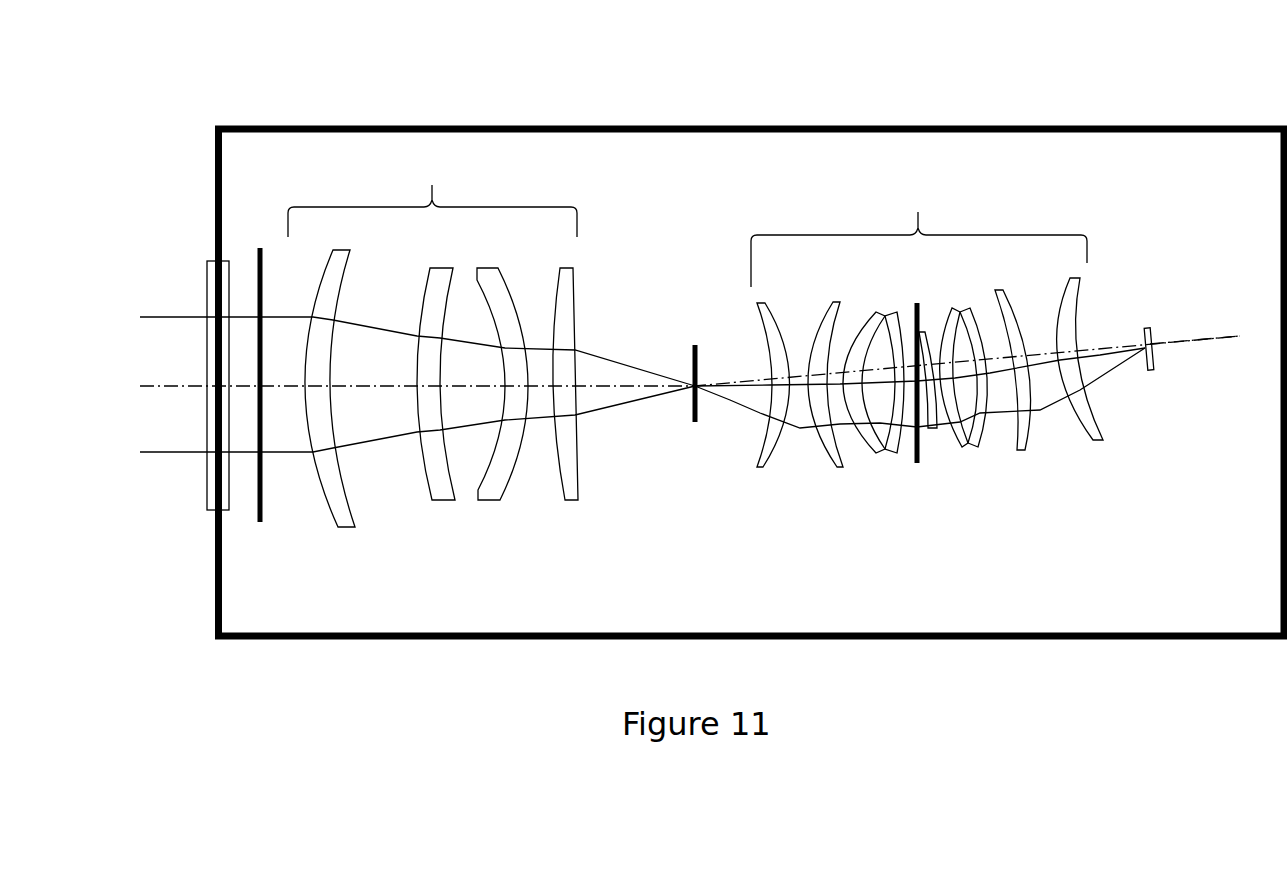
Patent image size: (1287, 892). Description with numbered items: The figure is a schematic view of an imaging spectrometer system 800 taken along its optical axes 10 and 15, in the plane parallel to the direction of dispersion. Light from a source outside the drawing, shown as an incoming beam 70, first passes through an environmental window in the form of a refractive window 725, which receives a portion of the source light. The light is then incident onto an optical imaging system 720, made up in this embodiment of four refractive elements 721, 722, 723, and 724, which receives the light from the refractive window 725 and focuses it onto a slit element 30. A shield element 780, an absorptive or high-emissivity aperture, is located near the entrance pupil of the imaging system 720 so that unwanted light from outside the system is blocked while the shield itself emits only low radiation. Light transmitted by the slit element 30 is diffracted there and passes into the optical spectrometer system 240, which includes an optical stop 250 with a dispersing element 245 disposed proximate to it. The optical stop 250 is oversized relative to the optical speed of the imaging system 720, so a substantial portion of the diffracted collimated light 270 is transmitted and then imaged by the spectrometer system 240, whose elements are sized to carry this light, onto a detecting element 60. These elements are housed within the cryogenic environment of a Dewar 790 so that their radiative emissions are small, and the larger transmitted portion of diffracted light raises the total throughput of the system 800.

The imaging spectrometer system 800 is at (208, 77).
The Dewar 790 is at (730, 125).
The optical imaging system 720 is at (432, 194).
The refractive element 721 is at (345, 525).
The refractive element 722 is at (440, 500).
The refractive element 723 is at (490, 500).
The refractive element 724 is at (570, 500).
The refractive window 725 is at (207, 285).
The shield element 780 is at (263, 502).
The incoming light beam 70 is at (180, 318).
The optical axis 10 is at (180, 390).
The slit element 30 is at (682, 365).
The optical spectrometer system 240 is at (927, 324).
The diffracted collimated light 270 is at (758, 417).
The optical stop 250 is at (915, 465).
The dispersing element 245 is at (930, 437).
The detecting element 60 is at (1157, 347).
The optical axis 15 is at (1200, 343).